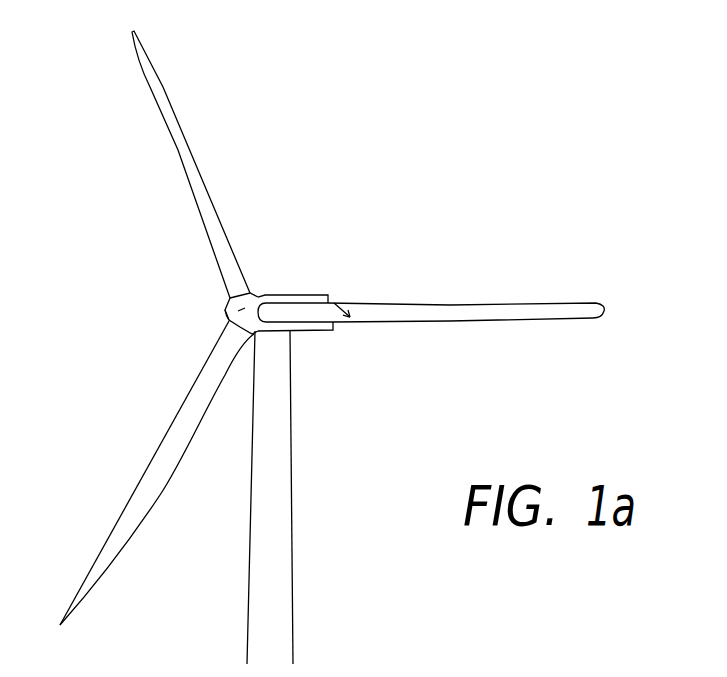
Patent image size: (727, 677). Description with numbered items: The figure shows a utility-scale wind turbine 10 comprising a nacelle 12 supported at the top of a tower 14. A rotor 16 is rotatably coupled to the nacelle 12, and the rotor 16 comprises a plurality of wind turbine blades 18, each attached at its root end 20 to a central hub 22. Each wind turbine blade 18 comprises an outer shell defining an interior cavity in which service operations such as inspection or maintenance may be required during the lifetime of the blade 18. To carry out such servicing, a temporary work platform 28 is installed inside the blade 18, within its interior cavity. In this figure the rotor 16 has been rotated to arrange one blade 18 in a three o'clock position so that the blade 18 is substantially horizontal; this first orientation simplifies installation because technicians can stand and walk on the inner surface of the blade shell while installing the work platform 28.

The wind turbine 10 is at (68, 200).
The nacelle 12 is at (309, 296).
The tower 14 is at (283, 494).
The rotor 16 is at (251, 218).
The wind turbine blade 18 is at (185, 148).
The root end 20 is at (246, 292).
The central hub 22 is at (223, 315).
The work platform 28 is at (353, 311).